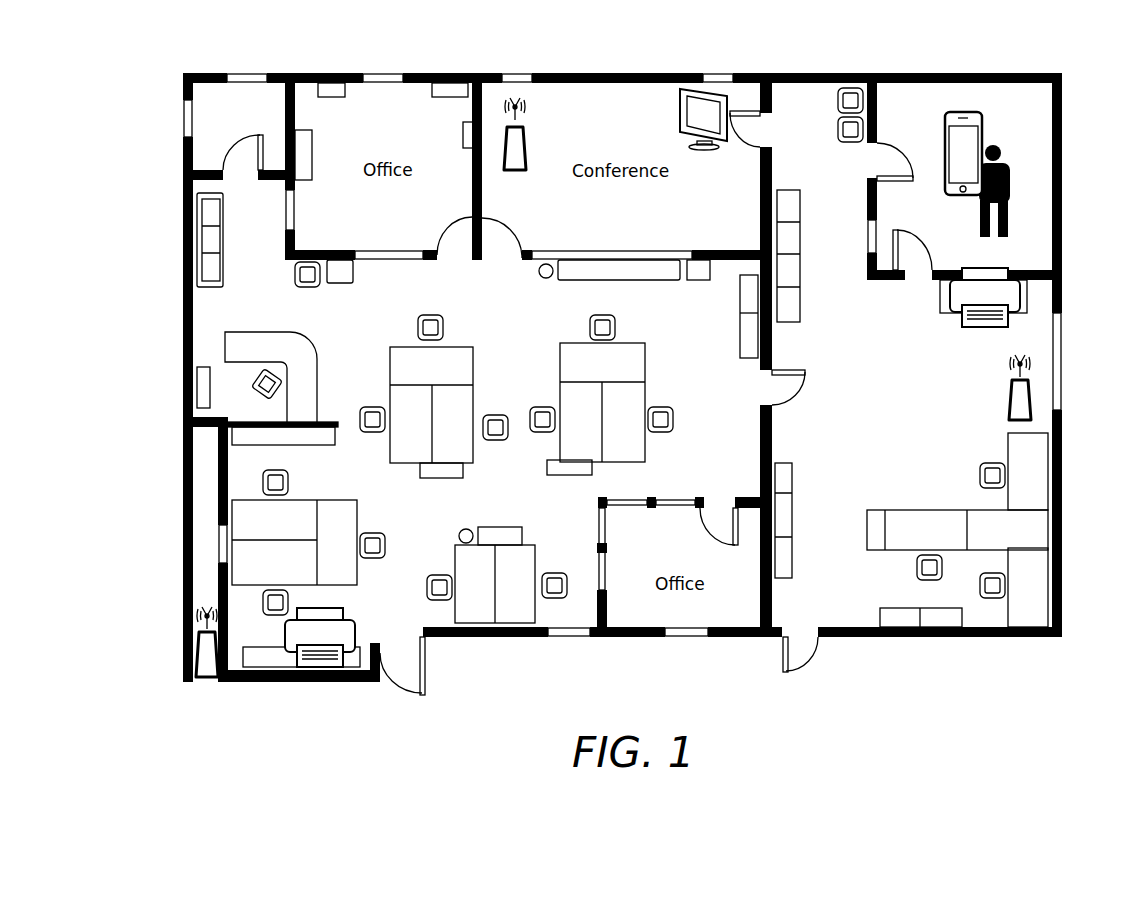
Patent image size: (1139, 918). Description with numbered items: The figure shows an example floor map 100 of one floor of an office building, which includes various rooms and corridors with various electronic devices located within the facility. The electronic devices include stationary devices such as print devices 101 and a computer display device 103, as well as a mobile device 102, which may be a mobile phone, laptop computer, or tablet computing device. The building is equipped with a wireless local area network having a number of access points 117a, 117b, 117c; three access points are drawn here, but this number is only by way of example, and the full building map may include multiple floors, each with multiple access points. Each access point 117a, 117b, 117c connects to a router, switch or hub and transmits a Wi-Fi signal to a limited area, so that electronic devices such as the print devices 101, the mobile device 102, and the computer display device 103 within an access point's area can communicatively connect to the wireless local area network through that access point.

The floor map 100 is at (212, 50).
The print device 101 is at (318, 635).
The mobile device 102 is at (970, 135).
The computer display device 103 is at (712, 102).
The access point 117a is at (207, 663).
The access point 117b is at (515, 100).
The access point 117c is at (1020, 400).